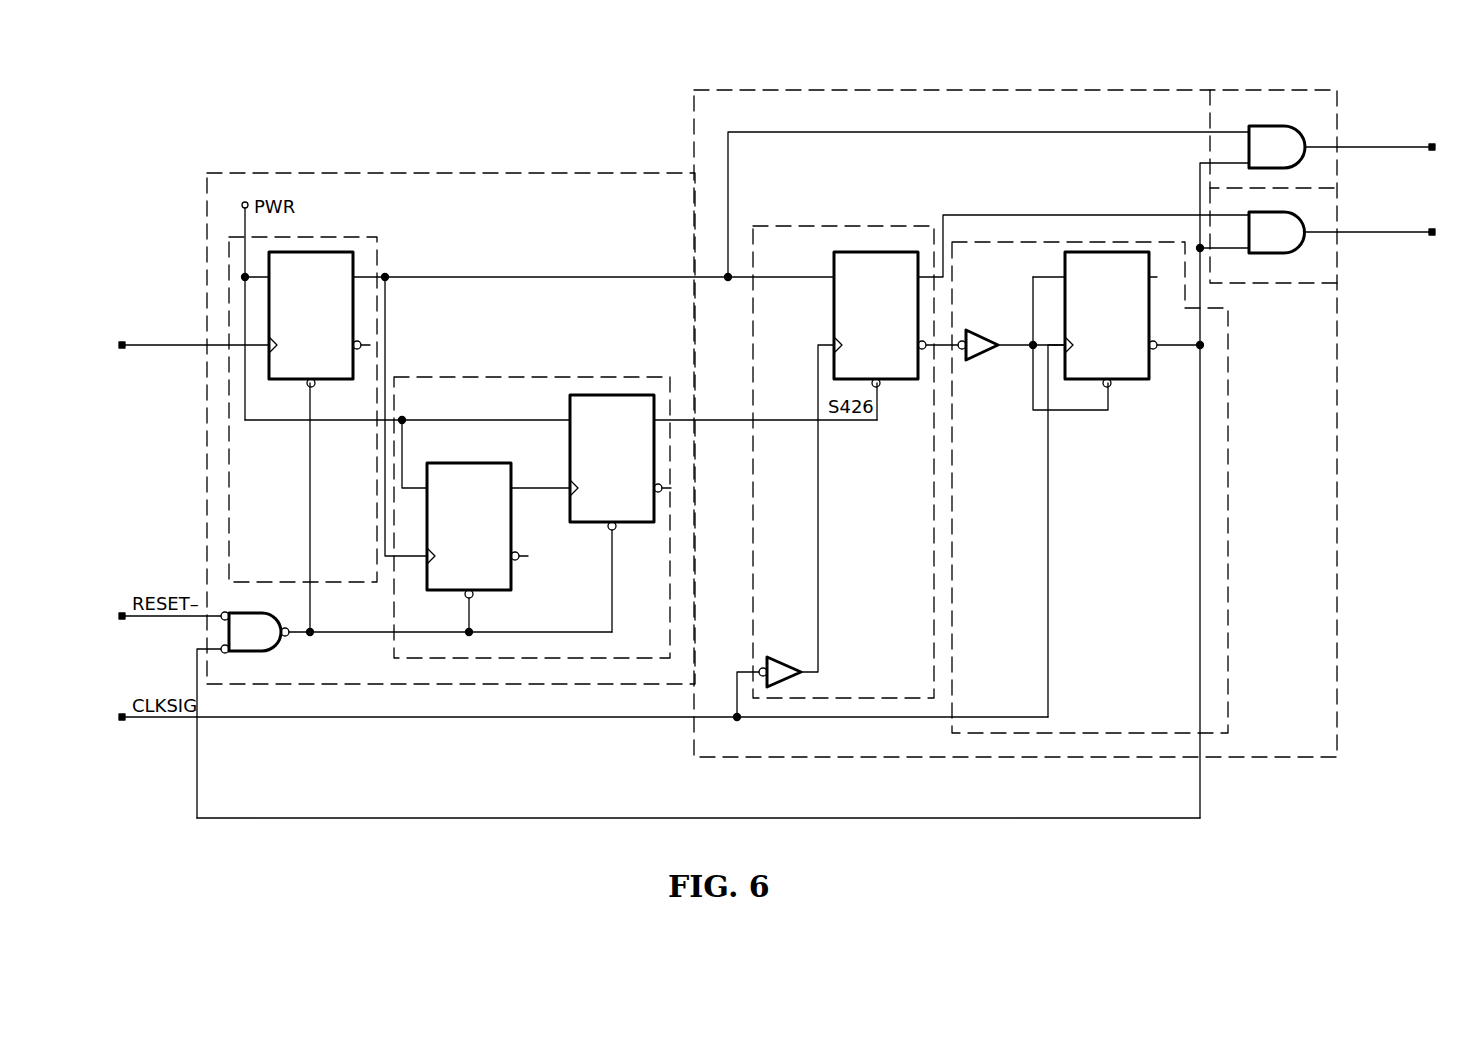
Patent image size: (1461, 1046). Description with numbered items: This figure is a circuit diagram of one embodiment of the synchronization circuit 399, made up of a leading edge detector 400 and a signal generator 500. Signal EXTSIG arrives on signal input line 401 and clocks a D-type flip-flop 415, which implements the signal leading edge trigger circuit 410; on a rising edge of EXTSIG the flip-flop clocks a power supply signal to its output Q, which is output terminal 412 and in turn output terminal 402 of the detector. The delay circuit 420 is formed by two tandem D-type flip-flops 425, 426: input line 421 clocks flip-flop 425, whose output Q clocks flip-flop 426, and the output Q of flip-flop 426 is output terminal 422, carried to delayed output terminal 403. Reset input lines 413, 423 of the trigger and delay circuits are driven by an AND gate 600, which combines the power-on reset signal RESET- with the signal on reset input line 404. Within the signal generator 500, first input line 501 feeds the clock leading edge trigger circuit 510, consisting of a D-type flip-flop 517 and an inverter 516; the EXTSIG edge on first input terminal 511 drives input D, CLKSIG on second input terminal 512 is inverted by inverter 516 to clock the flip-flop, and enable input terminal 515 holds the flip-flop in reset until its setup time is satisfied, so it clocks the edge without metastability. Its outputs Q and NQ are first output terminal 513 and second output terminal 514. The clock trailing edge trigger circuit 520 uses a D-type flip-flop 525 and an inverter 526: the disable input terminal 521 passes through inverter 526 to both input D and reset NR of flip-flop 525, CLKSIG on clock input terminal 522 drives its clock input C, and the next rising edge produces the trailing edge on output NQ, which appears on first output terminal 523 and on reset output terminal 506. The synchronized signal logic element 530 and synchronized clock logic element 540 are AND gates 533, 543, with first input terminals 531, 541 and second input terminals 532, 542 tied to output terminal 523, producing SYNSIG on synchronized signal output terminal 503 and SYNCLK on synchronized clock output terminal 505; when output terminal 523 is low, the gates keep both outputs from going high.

The synchronization circuit 399 is at (471, 838).
The leading edge detector 400 is at (431, 172).
The signal input line 401 is at (171, 353).
The output terminal 402 is at (694, 276).
The delayed output terminal 403 is at (694, 422).
The reset input line 404 is at (197, 663).
The signal leading edge trigger circuit 410 is at (290, 493).
The output terminal 412 is at (386, 275).
The reset input line 413 is at (314, 621).
The D-type flip-flop 415 is at (319, 319).
The delay circuit 420 is at (575, 604).
The input line 421 is at (388, 325).
The output terminal 422 is at (672, 376).
The reset input line 423 is at (348, 637).
The D-type flip-flop 425 is at (498, 530).
The D-type flip-flop 426 is at (620, 462).
The signal generator 500 is at (973, 89).
The first input line 501 is at (713, 280).
The synchronized signal output terminal 503 is at (1306, 143).
The synchronized clock output terminal 505 is at (1304, 233).
The reset output terminal 506 is at (1203, 733).
The clock leading edge trigger circuit 510 is at (884, 525).
The first input terminal 511 is at (753, 282).
The second input terminal 512 is at (757, 676).
The first output terminal 513 is at (932, 273).
The second output terminal 514 is at (931, 352).
The enable input terminal 515 is at (754, 420).
The inverter 516 is at (782, 665).
The D-type flip-flop 517 is at (880, 319).
The clock trailing edge trigger circuit 520 is at (1105, 538).
The disable input terminal 521 is at (951, 350).
The clock input terminal 522 is at (952, 716).
The first output terminal 523 is at (1203, 309).
The D-type flip-flop 525 is at (1111, 319).
The inverter 526 is at (976, 330).
The synchronized signal logic element 530 is at (1334, 102).
The first input terminal 531 is at (1248, 127).
The second input terminal 532 is at (1235, 163).
The AND gate 533 is at (1267, 133).
The synchronized clock logic element 540 is at (1334, 197).
The first input terminal 541 is at (1217, 222).
The second input terminal 542 is at (1250, 255).
The AND gate 543 is at (1293, 240).
The AND gate 600 is at (250, 613).